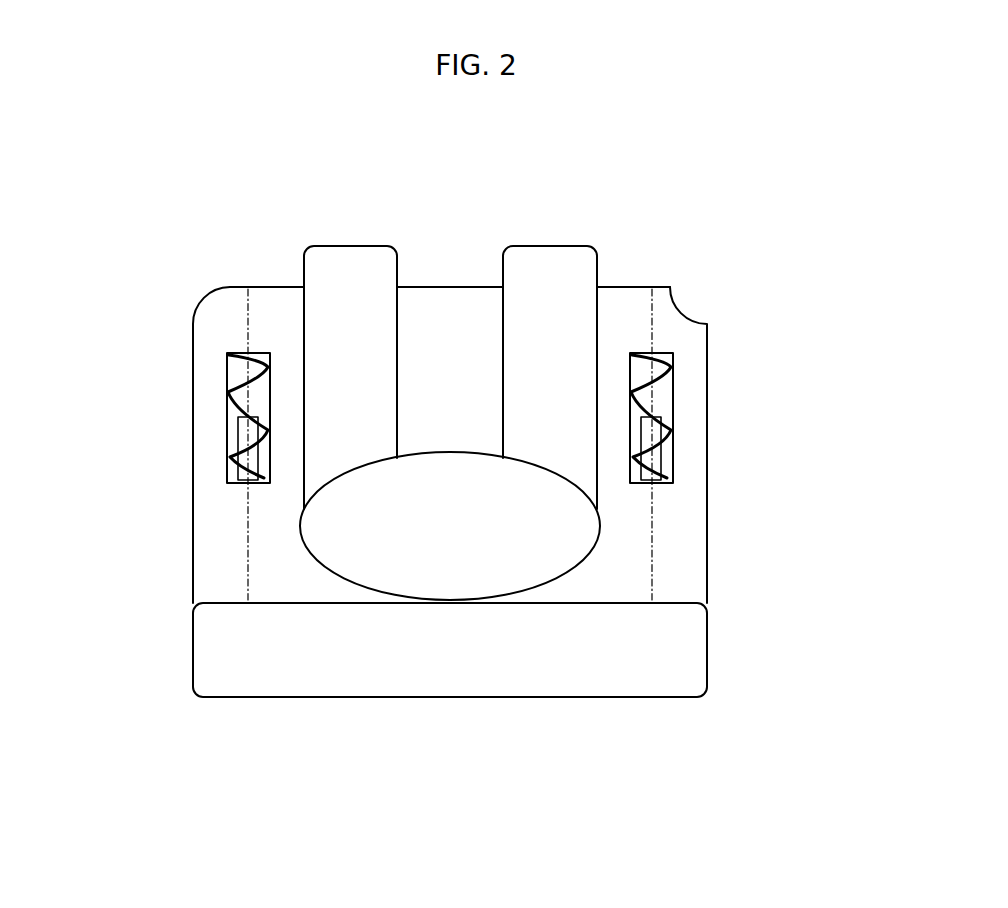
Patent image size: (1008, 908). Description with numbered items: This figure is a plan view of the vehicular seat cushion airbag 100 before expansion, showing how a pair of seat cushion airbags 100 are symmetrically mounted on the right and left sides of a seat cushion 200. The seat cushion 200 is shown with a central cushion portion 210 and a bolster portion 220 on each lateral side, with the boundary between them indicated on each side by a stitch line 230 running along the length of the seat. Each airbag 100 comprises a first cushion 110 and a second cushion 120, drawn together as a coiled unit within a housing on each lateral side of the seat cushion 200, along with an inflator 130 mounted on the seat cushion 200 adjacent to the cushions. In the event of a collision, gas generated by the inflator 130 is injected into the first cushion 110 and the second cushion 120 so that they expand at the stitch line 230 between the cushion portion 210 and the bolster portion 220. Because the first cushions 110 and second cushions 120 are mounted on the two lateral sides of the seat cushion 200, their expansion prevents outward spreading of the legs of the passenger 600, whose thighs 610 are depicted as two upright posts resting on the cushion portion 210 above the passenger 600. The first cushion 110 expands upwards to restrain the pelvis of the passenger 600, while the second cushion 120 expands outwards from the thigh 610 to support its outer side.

The vehicular seat cushion airbag 100 is at (229, 353).
The first cushion 110 is at (459, 416).
The second cushion 120 is at (238, 404).
The inflator 130 is at (243, 432).
The seat cushion 200 is at (453, 279).
The cushion portion 210 is at (623, 305).
The bolster portion 220 is at (217, 553).
The center line 230 is at (248, 318).
The passenger 600 is at (574, 576).
The thigh 610 is at (350, 263).